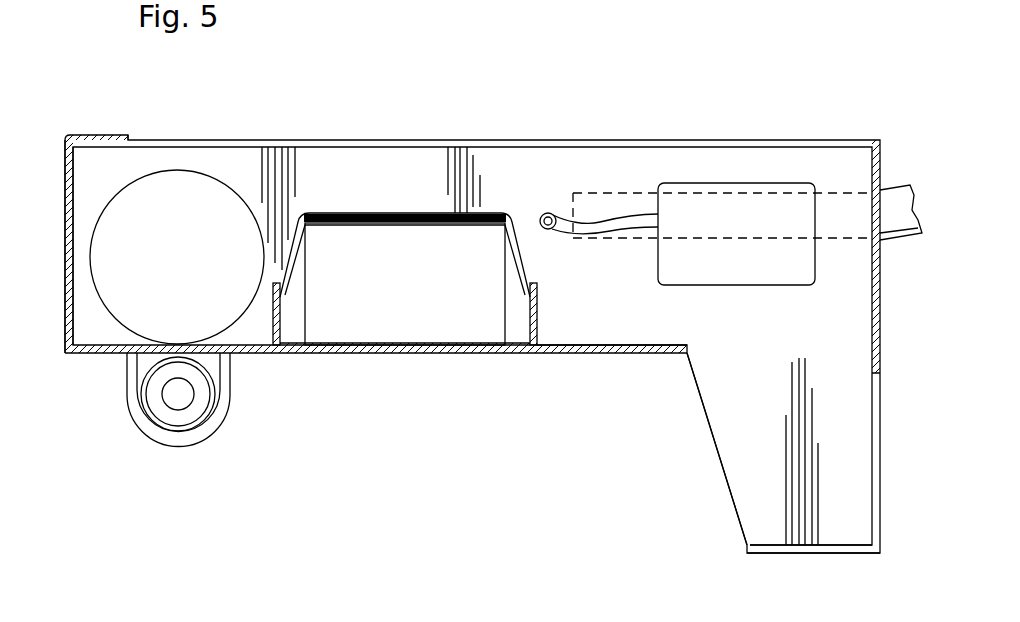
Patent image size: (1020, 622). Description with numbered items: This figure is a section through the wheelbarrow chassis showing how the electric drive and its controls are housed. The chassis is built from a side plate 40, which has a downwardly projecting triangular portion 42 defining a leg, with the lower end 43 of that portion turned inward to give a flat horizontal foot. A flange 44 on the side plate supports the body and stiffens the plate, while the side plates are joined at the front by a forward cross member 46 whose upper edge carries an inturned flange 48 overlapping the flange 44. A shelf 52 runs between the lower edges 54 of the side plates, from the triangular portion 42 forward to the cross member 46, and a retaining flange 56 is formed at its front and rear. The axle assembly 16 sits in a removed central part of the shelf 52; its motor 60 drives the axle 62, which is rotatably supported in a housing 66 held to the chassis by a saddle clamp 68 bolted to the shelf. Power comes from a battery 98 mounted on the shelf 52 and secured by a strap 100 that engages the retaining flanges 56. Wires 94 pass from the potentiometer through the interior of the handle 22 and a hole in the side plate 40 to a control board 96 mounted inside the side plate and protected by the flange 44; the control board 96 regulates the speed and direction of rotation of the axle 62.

The axle assembly 16 is at (252, 241).
The handle 22 is at (902, 205).
The side plate 40 is at (600, 330).
The triangular portion 42 is at (748, 445).
The lower end 43 is at (805, 550).
The flange 44 is at (453, 145).
The forward cross member 46 is at (65, 237).
The inturned flange 48 is at (132, 135).
The shelf 52 is at (400, 353).
The lower edge 54 is at (497, 353).
The retaining flange 56 is at (282, 305).
The motor 60 is at (153, 245).
The axle 62 is at (170, 396).
The housing 66 is at (141, 392).
The saddle clamp 68 is at (222, 402).
The wires 94 is at (615, 222).
The control board 96 is at (710, 193).
The battery 98 is at (422, 282).
The strap 100 is at (385, 216).